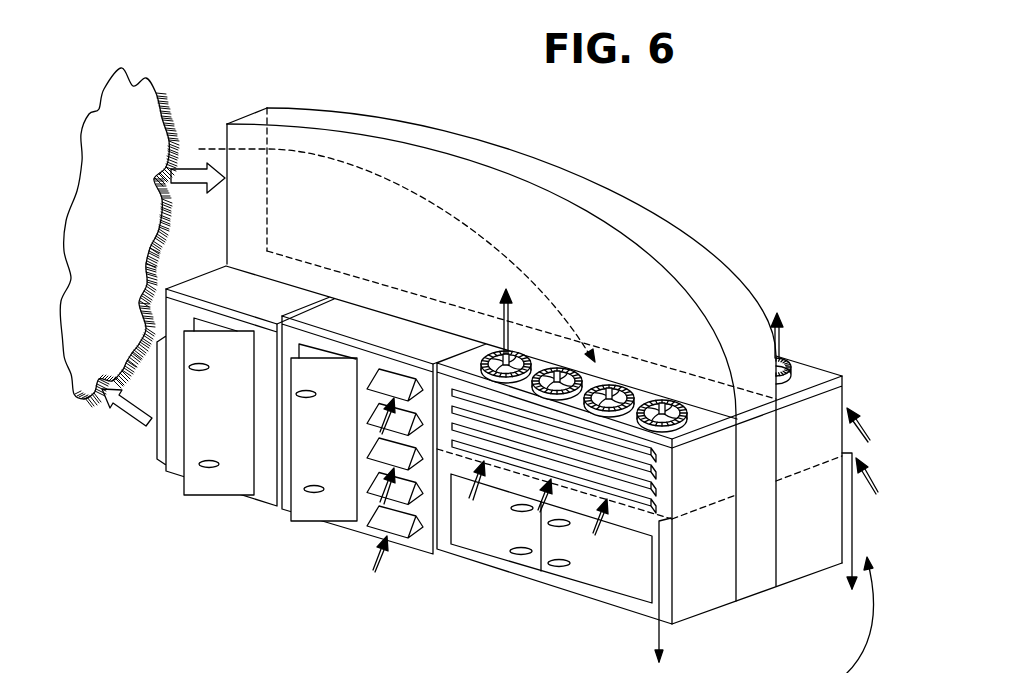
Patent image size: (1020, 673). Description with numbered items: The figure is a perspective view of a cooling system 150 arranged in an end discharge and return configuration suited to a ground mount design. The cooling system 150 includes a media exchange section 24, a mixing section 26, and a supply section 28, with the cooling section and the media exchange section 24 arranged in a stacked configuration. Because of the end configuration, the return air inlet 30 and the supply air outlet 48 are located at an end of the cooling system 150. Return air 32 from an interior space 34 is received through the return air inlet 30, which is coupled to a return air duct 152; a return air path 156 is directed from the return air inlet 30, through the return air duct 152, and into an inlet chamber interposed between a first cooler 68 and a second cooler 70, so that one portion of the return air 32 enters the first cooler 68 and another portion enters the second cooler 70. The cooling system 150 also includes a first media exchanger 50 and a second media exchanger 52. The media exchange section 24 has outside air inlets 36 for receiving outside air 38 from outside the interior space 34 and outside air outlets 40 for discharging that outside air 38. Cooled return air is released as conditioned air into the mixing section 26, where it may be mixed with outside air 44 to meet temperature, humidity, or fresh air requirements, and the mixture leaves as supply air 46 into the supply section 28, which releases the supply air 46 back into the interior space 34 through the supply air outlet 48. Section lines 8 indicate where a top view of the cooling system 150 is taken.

The section lines 8 is at (762, 563).
The media exchange section 24 is at (866, 352).
The mixing section 26 is at (365, 343).
The supply section 28 is at (255, 300).
The return air inlet 30 is at (228, 202).
The return air 32 is at (186, 162).
The interior space 34 is at (90, 363).
The outside air inlets 36 is at (658, 462).
The outside air 38 is at (608, 527).
The outside air outlets 40 is at (677, 397).
The outside air 44 is at (377, 555).
The supply air 46 is at (123, 408).
The supply air outlet 48 is at (153, 458).
The first media exchanger 50 is at (707, 420).
The second media exchanger 52 is at (800, 370).
The first cooler 68 is at (692, 603).
The second cooler 70 is at (797, 568).
The cooling system 150 is at (747, 141).
The return air duct 152 is at (523, 152).
The return air path 156 is at (523, 255).